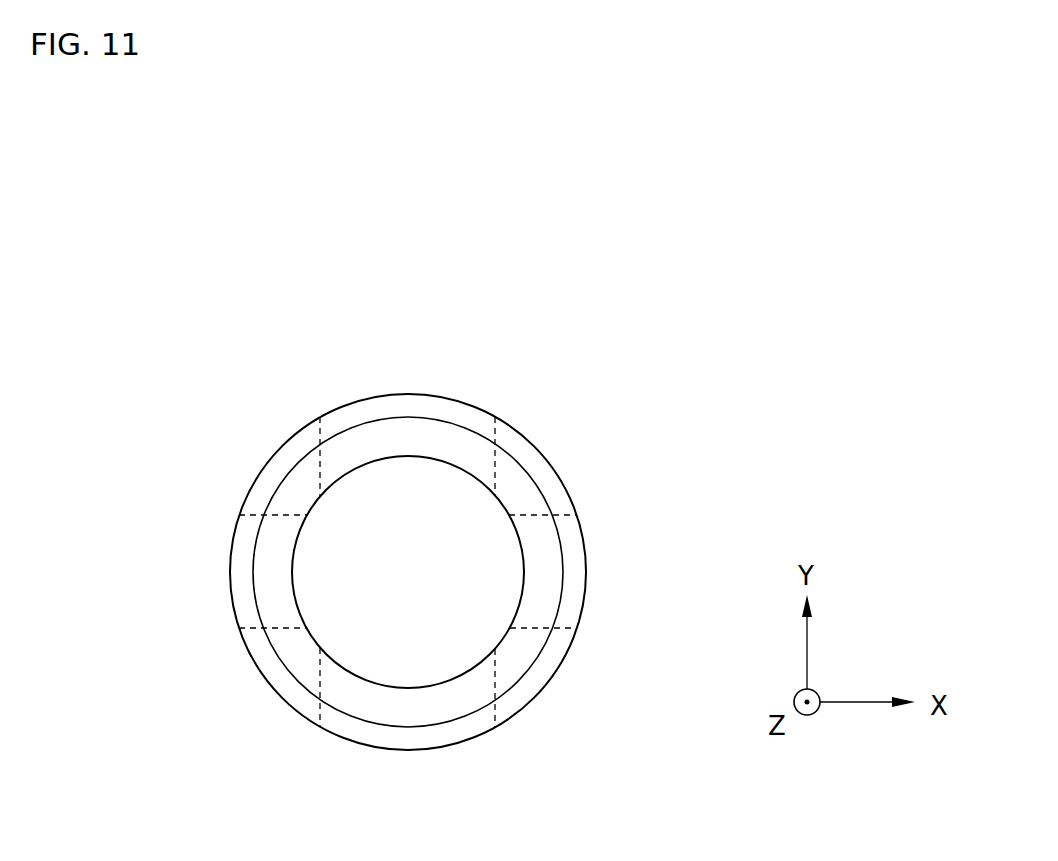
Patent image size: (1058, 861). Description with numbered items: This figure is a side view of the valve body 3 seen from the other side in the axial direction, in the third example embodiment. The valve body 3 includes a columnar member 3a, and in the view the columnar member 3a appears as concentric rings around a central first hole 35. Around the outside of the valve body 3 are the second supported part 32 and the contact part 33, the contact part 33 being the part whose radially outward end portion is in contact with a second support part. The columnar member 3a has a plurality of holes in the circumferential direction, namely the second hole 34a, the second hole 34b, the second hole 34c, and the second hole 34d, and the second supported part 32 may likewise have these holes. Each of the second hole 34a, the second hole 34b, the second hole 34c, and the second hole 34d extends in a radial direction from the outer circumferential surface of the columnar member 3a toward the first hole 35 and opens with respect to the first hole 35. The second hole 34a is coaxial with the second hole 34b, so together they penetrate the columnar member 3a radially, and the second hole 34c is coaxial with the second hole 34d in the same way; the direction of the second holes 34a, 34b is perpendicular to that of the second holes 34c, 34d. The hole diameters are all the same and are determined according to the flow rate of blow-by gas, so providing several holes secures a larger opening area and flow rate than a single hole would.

The valve body 3 is at (532, 463).
The columnar member 3a is at (523, 488).
The second supported part 32 is at (558, 648).
The contact part 33 is at (517, 700).
The second hole 34a is at (527, 515).
The second hole 34b is at (290, 515).
The second hole 34c is at (320, 465).
The second hole 34d is at (320, 688).
The first hole 35 is at (500, 505).